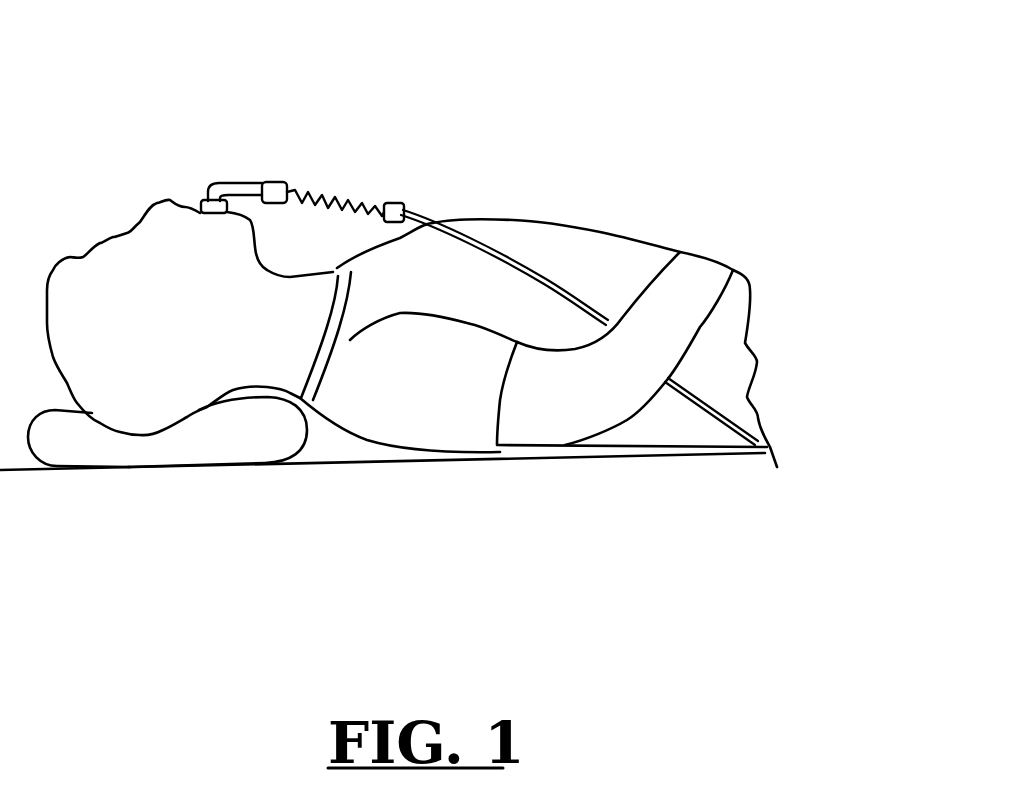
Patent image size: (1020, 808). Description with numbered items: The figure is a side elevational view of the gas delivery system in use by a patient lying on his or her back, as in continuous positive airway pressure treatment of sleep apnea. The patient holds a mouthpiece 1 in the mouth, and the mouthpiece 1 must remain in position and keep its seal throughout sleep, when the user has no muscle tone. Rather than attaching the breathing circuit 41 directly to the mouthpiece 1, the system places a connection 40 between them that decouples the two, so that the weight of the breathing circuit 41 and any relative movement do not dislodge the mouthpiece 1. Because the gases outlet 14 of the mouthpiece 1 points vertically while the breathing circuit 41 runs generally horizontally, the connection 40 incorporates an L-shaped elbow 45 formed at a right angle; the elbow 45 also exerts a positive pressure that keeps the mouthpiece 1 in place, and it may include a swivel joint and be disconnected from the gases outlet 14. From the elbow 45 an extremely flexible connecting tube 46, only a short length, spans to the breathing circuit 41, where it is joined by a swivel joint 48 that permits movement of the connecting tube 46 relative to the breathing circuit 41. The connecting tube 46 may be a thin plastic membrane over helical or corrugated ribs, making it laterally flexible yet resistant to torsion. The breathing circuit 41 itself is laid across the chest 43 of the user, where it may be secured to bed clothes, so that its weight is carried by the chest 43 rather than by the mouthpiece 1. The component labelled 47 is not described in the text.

The mouthpiece 1 is at (217, 210).
The gases outlet 14 is at (203, 203).
The connection 40 is at (417, 237).
The breathing circuit 41 is at (570, 297).
The chest 43 is at (463, 277).
The L-shaped elbow 45 is at (230, 183).
The connecting tube 46 is at (365, 197).
The connector 47 is at (273, 183).
The swivel joint 48 is at (397, 207).